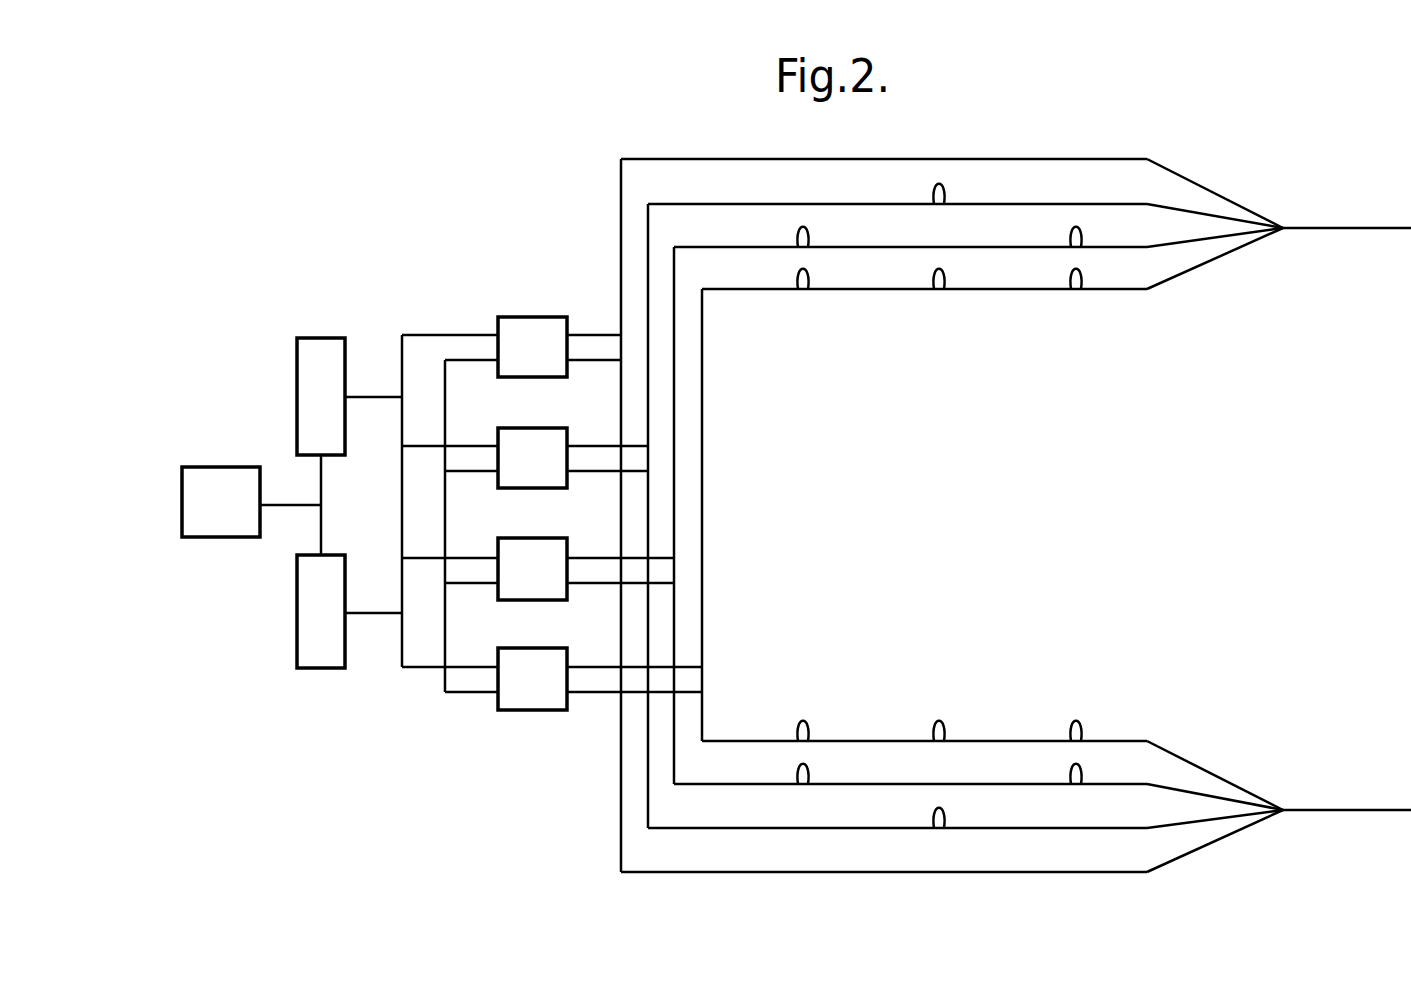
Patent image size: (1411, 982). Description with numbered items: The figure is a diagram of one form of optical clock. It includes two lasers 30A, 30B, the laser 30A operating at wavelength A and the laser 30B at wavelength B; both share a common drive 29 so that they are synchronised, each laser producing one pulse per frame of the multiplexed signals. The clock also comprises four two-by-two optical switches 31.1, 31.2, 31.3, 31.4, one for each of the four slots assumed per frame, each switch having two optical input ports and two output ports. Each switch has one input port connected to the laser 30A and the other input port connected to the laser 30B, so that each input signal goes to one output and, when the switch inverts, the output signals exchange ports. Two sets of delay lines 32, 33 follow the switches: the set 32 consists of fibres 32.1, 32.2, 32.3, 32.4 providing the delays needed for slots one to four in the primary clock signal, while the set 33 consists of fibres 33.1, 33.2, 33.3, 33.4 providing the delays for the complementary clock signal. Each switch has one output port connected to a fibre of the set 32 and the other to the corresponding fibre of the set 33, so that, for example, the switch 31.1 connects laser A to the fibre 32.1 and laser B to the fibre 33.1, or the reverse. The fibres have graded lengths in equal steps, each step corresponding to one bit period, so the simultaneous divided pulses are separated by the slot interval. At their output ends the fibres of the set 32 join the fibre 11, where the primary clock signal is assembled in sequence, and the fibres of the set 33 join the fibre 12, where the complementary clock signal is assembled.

The fibre 11 is at (1340, 228).
The fibre 12 is at (1338, 810).
The common drive 29 is at (208, 515).
The laser 30A is at (320, 338).
The laser 30B is at (320, 668).
The 2×2 optical switch 31.1 is at (559, 347).
The 2×2 optical switch 31.2 is at (573, 458).
The 2×2 optical switch 31.3 is at (586, 569).
The 2×2 optical switch 31.4 is at (600, 679).
The set of delay lines 32 is at (1137, 325).
The fibre 32.1 is at (760, 159).
The fibre 32.2 is at (778, 204).
The fibre 32.3 is at (875, 247).
The fibre 32.4 is at (836, 290).
The set of delay lines 33 is at (1129, 695).
The fibre 33.1 is at (837, 873).
The fibre 33.2 is at (787, 828).
The fibre 33.3 is at (890, 784).
The fibre 33.4 is at (842, 741).